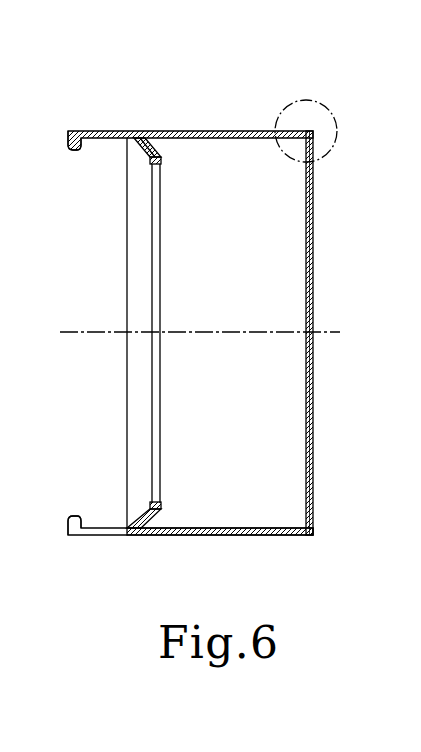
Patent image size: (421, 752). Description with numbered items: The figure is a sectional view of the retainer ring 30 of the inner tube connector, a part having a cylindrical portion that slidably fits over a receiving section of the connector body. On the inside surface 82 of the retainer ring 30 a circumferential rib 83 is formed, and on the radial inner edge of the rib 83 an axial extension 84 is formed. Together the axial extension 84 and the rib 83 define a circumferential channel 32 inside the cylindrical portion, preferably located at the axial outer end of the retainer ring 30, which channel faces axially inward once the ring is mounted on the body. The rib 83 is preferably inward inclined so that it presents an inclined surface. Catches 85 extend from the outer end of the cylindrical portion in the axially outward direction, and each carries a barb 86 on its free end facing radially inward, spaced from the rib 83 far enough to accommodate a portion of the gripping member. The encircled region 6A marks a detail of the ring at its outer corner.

The retainer ring 30 is at (264, 84).
The circumferential channel 32 is at (155, 145).
The inside surface 82 is at (262, 137).
The circumferential rib 83 is at (145, 141).
The axial extension 84 is at (161, 162).
The catches 85 is at (113, 130).
The barb 86 is at (82, 150).
The detail circle 6A is at (335, 133).